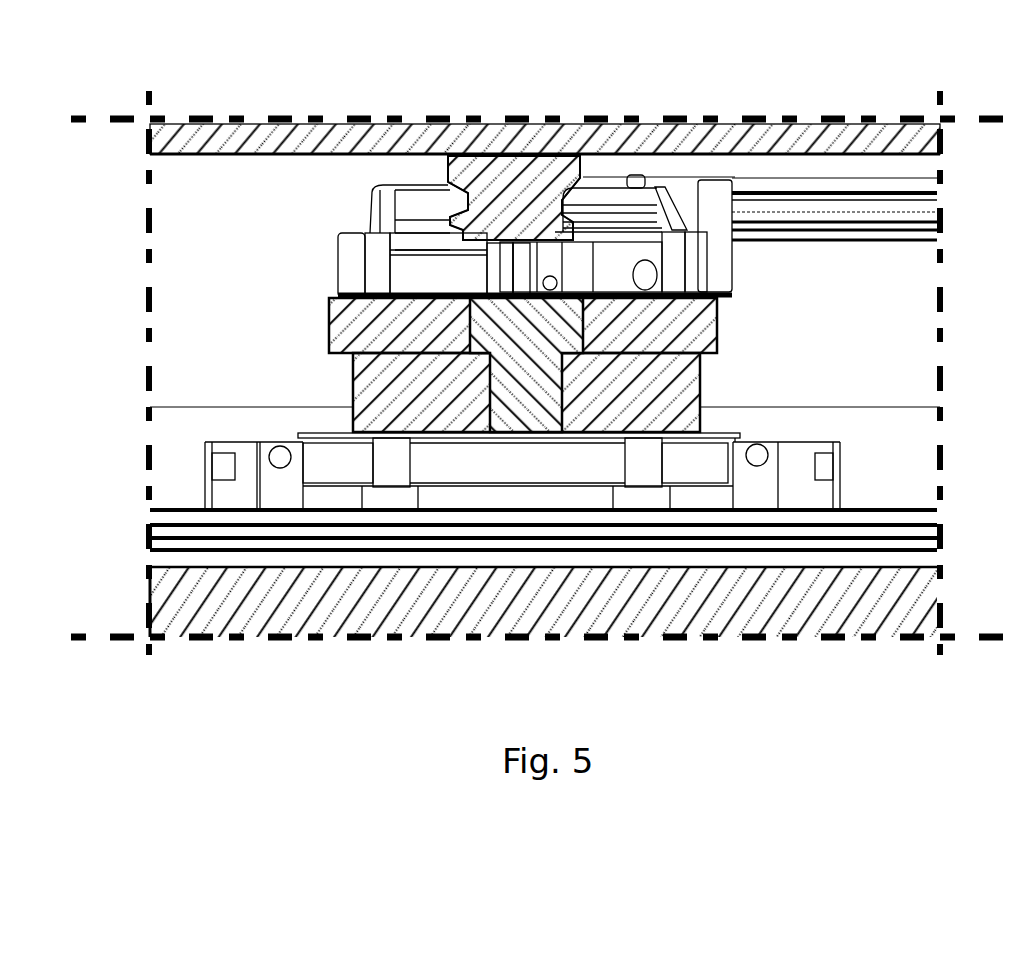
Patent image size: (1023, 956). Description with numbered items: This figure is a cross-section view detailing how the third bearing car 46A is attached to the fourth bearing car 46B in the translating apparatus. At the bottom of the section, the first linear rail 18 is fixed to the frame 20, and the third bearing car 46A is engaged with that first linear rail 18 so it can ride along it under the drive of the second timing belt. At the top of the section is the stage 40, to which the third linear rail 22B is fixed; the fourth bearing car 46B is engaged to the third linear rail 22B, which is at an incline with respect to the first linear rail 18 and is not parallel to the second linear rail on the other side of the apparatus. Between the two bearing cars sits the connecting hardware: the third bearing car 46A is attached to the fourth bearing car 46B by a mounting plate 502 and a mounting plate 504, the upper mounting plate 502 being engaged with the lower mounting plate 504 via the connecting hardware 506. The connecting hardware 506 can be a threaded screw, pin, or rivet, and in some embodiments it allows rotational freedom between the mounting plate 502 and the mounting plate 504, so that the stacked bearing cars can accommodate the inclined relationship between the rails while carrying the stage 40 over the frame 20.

The first linear rail 18 is at (148, 529).
The frame 20 is at (935, 592).
The third linear rail 22B is at (547, 215).
The stage 40 is at (280, 157).
The third bearing car 46A is at (262, 441).
The fourth bearing car 46B is at (338, 266).
The mounting plate 502 is at (717, 327).
The mounting plate 504 is at (700, 387).
The connecting hardware 506 is at (550, 346).